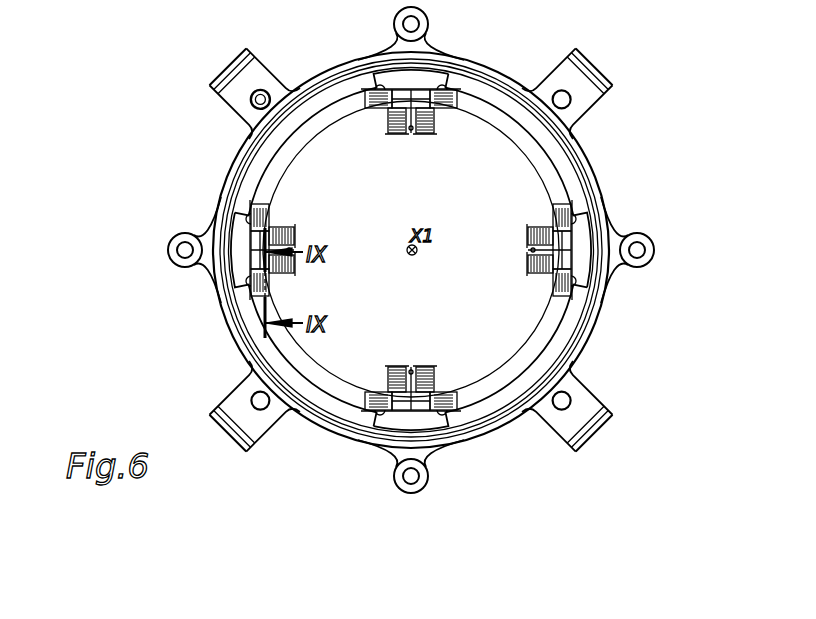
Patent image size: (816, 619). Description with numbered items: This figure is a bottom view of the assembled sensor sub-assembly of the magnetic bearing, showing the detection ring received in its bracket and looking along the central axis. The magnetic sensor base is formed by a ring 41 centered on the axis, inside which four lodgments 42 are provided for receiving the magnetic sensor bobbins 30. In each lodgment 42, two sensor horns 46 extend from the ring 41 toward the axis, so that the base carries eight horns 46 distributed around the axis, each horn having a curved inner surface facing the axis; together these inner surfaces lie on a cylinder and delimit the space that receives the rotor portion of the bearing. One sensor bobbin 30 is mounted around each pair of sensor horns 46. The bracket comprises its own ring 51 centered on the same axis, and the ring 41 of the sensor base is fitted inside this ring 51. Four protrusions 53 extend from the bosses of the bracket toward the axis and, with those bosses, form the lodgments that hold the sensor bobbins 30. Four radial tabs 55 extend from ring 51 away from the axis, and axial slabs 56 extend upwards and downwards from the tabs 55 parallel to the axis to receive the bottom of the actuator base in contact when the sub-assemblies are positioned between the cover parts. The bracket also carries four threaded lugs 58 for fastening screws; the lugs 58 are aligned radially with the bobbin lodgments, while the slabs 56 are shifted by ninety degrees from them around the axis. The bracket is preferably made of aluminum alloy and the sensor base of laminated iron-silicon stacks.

The sensor bobbin 30 is at (375, 268).
The ring 41 is at (550, 167).
The ring 51 is at (595, 175).
The lodgment 42 is at (582, 258).
The sensor horn 46 is at (528, 264).
The protrusion 53 is at (435, 423).
The radial tab 55 is at (231, 410).
The axial slab 56 is at (237, 402).
The threaded lug 58 is at (397, 486).